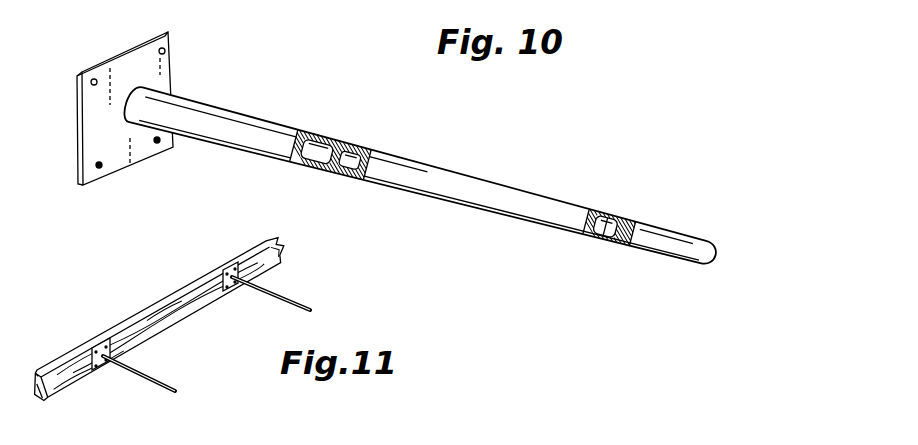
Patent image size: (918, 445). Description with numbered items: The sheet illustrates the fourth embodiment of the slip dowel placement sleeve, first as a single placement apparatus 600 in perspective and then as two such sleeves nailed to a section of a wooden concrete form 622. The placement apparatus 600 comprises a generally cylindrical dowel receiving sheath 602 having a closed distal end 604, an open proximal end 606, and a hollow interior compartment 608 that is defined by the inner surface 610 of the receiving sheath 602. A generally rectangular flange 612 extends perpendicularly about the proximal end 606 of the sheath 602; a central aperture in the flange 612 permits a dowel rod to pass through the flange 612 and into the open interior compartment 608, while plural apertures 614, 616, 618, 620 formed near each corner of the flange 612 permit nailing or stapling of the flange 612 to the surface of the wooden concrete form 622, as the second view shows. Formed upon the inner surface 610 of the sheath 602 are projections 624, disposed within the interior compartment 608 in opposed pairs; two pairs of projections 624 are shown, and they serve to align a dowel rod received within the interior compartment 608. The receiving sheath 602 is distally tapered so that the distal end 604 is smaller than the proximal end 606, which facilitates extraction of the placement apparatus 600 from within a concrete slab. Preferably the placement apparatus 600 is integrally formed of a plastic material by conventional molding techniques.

In FIG. 10, the placement apparatus 600 is at (542, 186).
In FIG. 11, the placement apparatus 600 is at (291, 291).
In FIG. 10, the dowel receiving sheath 602 is at (461, 177).
In FIG. 10, the closed distal end 604 is at (718, 249).
In FIG. 10, the open proximal end 606 is at (150, 96).
In FIG. 10, the hollow interior compartment 608 is at (606, 226).
In FIG. 10, the inner surface 610 is at (331, 155).
In FIG. 10, the rectangular flange 612 is at (95, 124).
In FIG. 10, the aperture 614 is at (86, 74).
In FIG. 10, the aperture 616 is at (168, 50).
In FIG. 10, the aperture 618 is at (100, 168).
In FIG. 10, the aperture 620 is at (158, 143).
In FIG. 11, the wooden concrete form 622 is at (165, 307).
In FIG. 10, the projections 624 is at (474, 192).